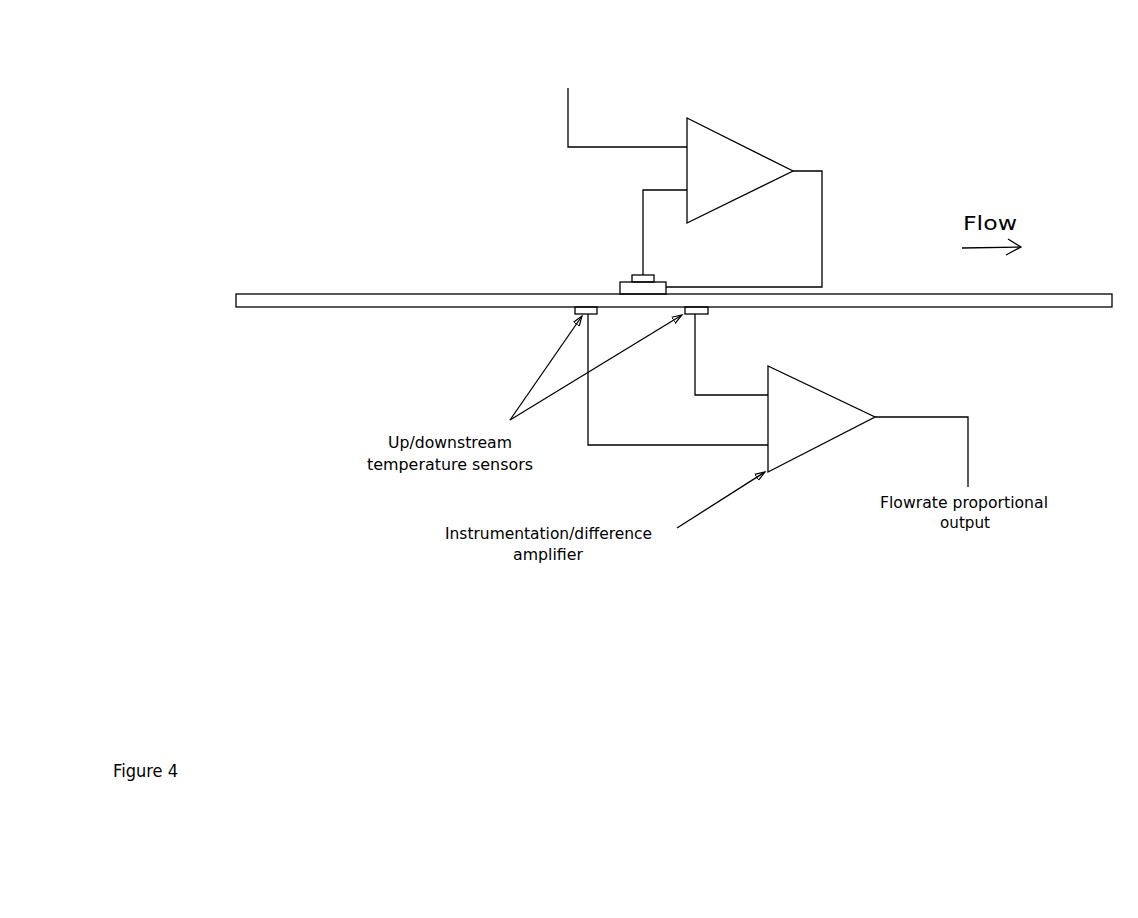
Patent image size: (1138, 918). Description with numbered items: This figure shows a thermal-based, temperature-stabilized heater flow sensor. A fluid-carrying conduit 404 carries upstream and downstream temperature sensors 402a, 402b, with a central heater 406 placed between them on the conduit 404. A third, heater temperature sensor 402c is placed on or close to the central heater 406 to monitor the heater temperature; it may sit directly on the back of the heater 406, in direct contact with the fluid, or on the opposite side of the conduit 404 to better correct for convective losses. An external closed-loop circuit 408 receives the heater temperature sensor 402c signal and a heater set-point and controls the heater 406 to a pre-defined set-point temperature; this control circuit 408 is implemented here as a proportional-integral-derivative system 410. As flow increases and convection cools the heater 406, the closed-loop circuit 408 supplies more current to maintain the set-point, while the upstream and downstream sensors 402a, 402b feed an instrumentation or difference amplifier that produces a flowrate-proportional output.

The upstream temperature sensor 402a is at (567, 312).
The downstream temperature sensor 402b is at (710, 313).
The heater temperature sensor 402c is at (628, 268).
The conduit 404 is at (377, 308).
The central heater 406 is at (617, 280).
The closed-loop circuit 408 is at (832, 283).
The proportional-integral-derivative (PID) system 410 is at (740, 170).